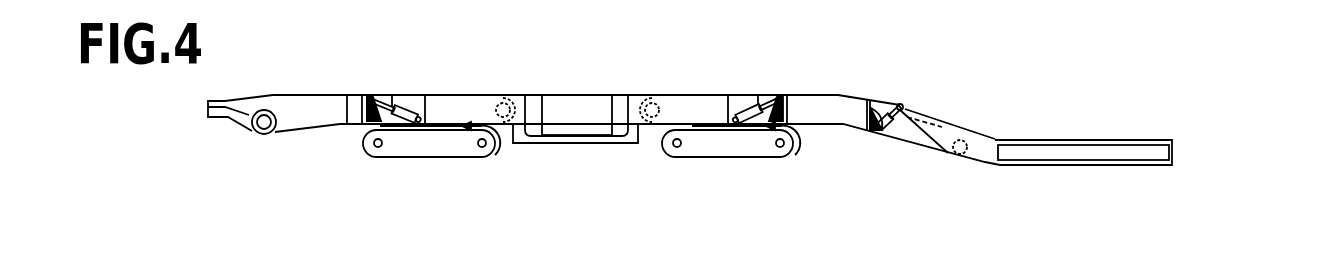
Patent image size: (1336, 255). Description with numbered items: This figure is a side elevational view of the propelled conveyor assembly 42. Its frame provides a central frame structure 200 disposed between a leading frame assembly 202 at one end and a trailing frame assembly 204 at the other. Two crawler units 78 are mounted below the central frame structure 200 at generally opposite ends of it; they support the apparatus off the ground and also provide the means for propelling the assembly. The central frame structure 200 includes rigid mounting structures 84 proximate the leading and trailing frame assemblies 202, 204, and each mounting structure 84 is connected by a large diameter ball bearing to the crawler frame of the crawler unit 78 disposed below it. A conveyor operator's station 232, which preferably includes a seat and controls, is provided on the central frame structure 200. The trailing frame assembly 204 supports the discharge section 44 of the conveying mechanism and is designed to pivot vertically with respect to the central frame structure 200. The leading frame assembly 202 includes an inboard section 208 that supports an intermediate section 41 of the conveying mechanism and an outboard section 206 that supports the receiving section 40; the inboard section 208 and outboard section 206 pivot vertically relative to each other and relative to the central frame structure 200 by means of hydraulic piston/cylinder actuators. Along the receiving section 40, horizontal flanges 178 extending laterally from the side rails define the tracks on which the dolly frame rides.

The propelled conveyor assembly 42 is at (266, 160).
The discharge section 44 is at (305, 94).
The trailing frame assembly 204 is at (328, 88).
The central frame structure 200 is at (520, 86).
The conveyor operator's station 232 is at (565, 108).
The inboard section 208 is at (702, 94).
The intermediate section 41 is at (811, 94).
The leading frame assembly 202 is at (905, 150).
The receiving section 40 is at (1066, 139).
The horizontal flanges 178 is at (1118, 140).
The outboard section 206 is at (1062, 166).
The crawler units 78 is at (412, 160).
The rigid mounting structures 84 is at (495, 155).